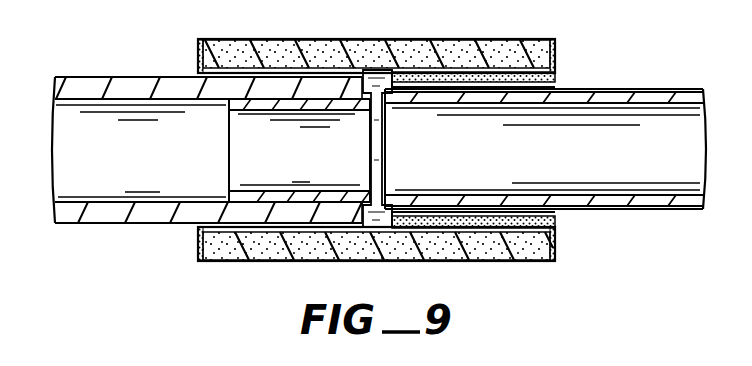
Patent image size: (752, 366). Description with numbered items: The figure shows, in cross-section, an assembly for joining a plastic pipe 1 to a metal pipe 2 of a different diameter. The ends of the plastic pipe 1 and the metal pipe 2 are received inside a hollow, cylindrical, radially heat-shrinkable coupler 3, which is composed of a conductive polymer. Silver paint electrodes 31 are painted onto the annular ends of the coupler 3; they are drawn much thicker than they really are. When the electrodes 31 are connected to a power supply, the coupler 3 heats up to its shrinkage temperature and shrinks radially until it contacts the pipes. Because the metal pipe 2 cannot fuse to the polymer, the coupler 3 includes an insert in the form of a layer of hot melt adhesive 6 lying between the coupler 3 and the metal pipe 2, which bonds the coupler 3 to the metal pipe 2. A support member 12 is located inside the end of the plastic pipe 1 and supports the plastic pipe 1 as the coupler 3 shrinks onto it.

The plastic pipe 1 is at (147, 212).
The metal pipe 2 is at (598, 207).
The coupler 3 is at (356, 48).
The layer of hot melt adhesive 6 is at (452, 74).
The support member 12 is at (280, 100).
The silver paint electrodes 31 is at (198, 58).